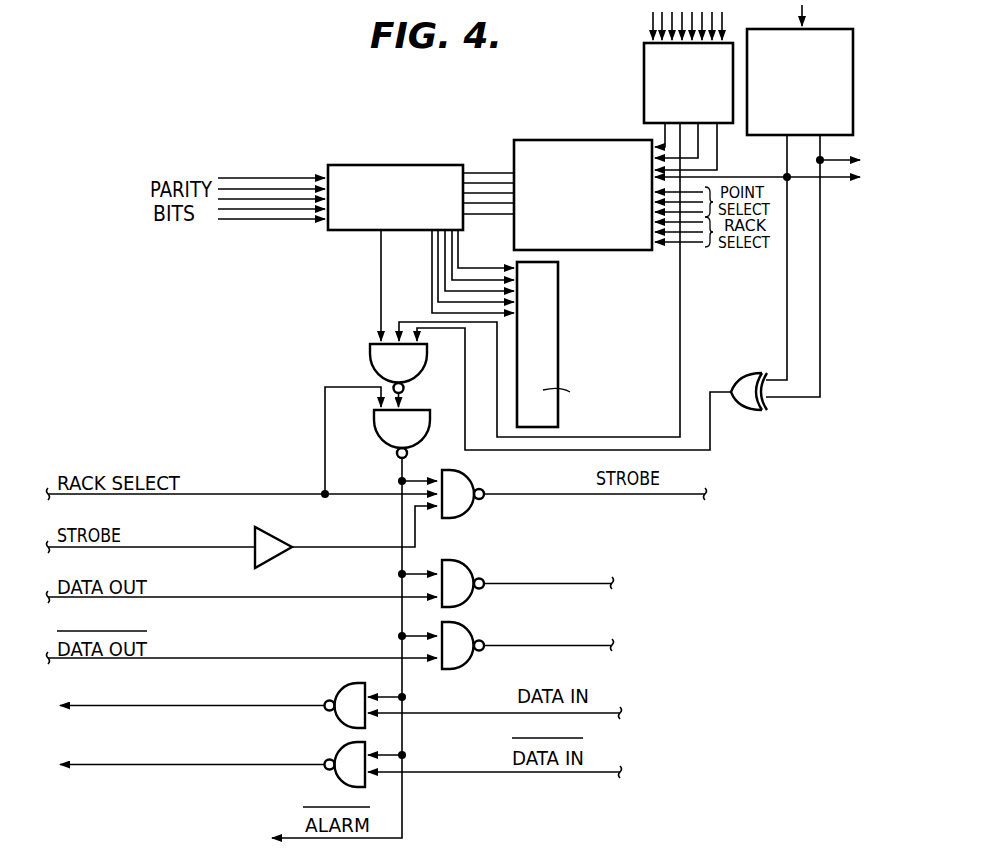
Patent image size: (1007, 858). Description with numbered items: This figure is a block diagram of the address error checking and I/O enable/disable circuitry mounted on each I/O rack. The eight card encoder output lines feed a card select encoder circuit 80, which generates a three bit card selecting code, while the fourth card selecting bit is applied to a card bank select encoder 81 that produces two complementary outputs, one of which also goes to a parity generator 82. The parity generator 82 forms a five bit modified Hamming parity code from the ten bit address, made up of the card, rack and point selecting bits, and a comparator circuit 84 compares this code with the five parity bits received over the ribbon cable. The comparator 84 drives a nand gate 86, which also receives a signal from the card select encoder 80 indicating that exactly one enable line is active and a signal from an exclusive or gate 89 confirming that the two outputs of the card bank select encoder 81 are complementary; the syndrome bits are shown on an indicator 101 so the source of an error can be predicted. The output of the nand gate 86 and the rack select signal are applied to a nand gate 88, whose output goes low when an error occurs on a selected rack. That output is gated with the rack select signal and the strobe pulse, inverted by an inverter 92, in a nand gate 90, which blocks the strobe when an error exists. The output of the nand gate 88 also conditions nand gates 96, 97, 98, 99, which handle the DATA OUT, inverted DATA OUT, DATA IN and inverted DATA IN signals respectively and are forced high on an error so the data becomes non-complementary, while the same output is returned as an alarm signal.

The card select encoder circuit 80 is at (648, 61).
The card bank select encoder 81 is at (755, 130).
The parity generator 82 is at (557, 150).
The comparator circuit 84 is at (408, 172).
The nand gate 86 is at (380, 359).
The nand gate 88 is at (390, 442).
The exclusive or gate 89 is at (746, 406).
The nand gate 90 is at (472, 512).
The inverter 92 is at (280, 564).
The nand gate 96 is at (475, 570).
The nand gate 97 is at (475, 622).
The nand gate 98 is at (343, 686).
The nand gate 99 is at (341, 752).
The indicator 101 is at (559, 360).